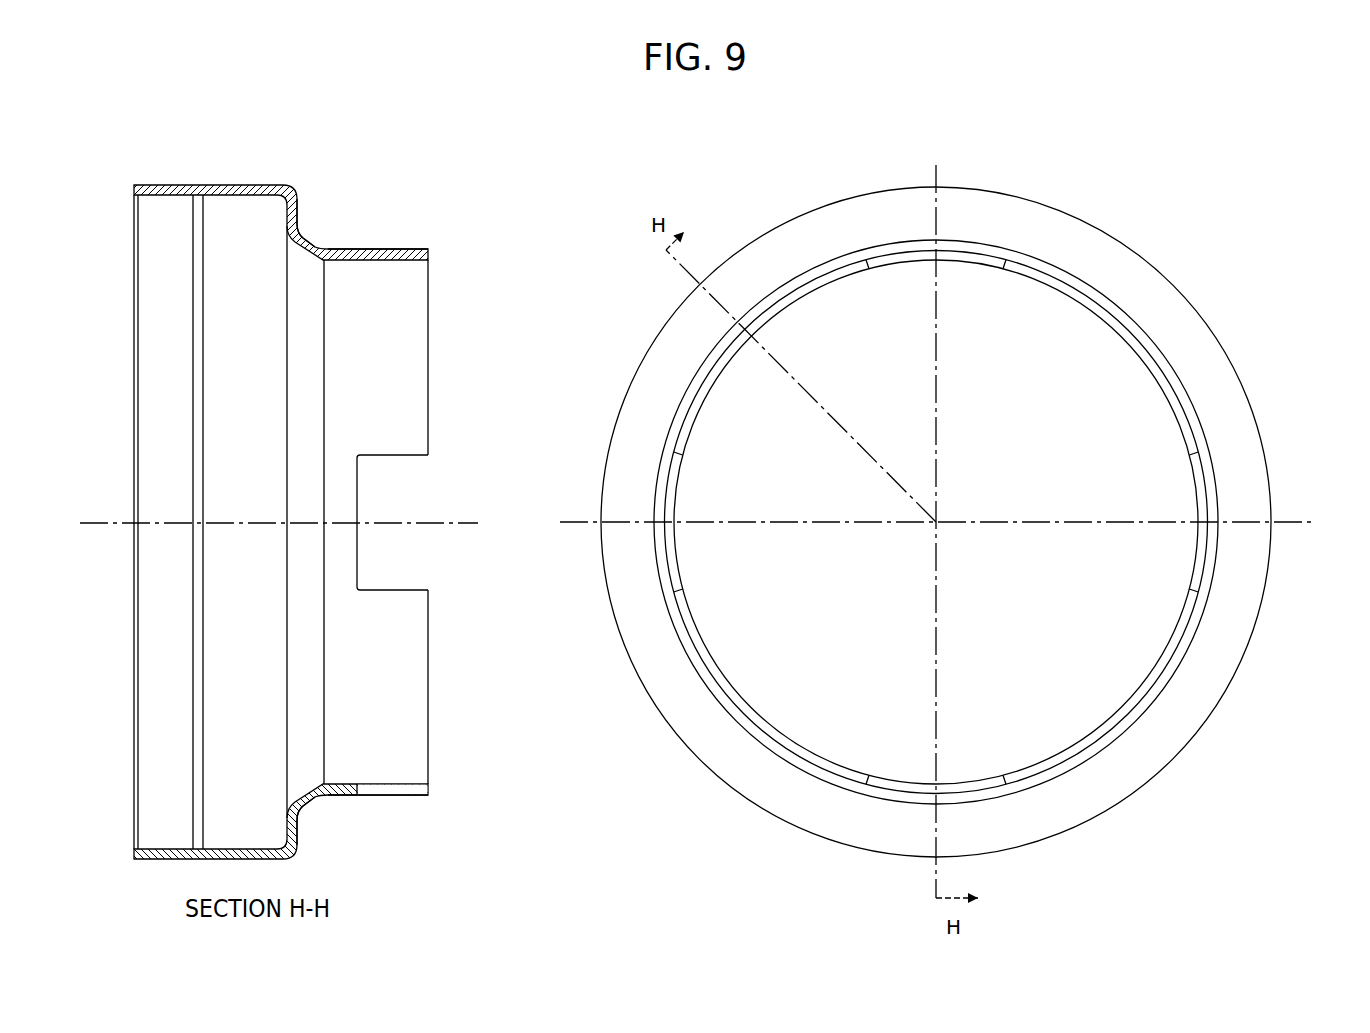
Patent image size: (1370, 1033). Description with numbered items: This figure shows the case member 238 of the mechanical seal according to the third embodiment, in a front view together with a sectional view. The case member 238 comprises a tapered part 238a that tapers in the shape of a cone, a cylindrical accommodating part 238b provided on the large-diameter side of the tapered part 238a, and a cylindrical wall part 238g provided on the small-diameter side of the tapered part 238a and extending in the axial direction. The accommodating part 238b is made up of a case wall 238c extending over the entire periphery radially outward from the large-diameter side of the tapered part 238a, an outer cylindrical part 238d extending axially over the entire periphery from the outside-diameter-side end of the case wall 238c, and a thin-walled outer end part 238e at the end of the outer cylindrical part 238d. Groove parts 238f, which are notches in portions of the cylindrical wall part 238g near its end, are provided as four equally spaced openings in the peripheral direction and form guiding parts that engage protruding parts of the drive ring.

The case member 238 is at (1144, 180).
The tapered part 238a is at (318, 246).
The accommodating part 238b is at (367, 102).
The case wall 238c is at (308, 242).
The outer cylindrical part 238d is at (235, 184).
The outer end part 238e is at (147, 184).
The groove part 238f is at (398, 483).
The cylindrical wall part 238g is at (353, 249).